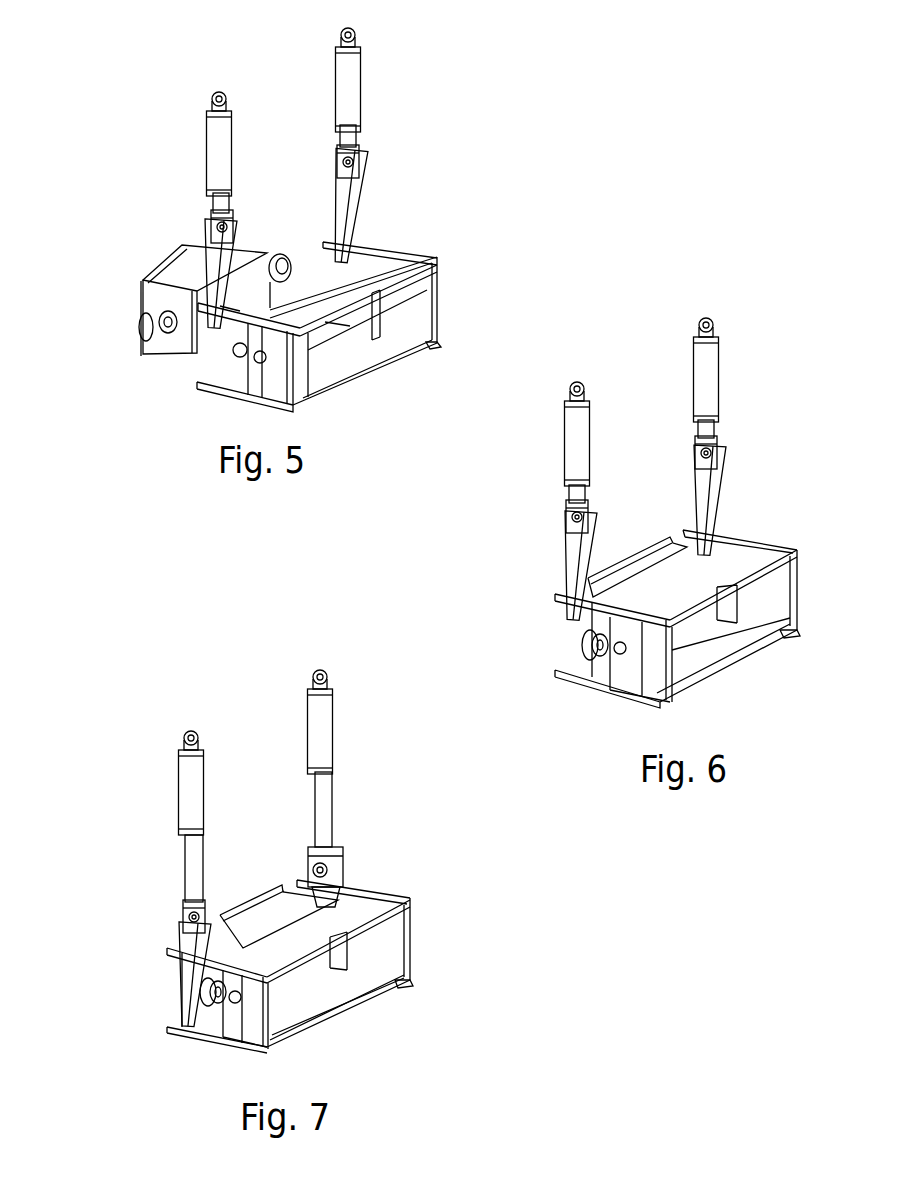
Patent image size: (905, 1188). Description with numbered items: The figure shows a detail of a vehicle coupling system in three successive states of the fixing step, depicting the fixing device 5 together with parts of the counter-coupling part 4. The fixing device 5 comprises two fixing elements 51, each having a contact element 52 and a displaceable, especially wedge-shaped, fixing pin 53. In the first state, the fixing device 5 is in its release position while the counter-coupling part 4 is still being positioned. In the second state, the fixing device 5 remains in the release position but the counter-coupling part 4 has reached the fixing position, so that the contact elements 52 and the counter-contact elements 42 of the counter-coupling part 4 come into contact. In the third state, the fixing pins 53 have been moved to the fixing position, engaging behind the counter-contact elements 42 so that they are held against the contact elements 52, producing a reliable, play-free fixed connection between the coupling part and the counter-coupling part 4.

In FIG. 5, the counter-coupling part 4 is at (152, 272).
In FIG. 6, the counter-coupling part 4 is at (660, 563).
In FIG. 7, the counter-coupling part 4 is at (274, 917).
In FIG. 5, the fixing device 5 is at (281, 249).
In FIG. 6, the fixing device 5 is at (660, 550).
In FIG. 7, the fixing device 5 is at (273, 901).
In FIG. 5, the counter-contact element 42 is at (142, 318).
In FIG. 6, the counter-contact element 42 is at (583, 635).
In FIG. 7, the counter-contact element 42 is at (205, 990).
In FIG. 5, the fixing element 51 is at (397, 219).
In FIG. 6, the fixing element 51 is at (764, 508).
In FIG. 7, the fixing element 51 is at (377, 863).
In FIG. 5, the contact element 52 is at (255, 357).
In FIG. 6, the contact element 52 is at (626, 652).
In FIG. 7, the contact element 52 is at (239, 999).
In FIG. 5, the fixing pin 53 is at (207, 230).
In FIG. 6, the fixing pin 53 is at (572, 547).
In FIG. 7, the fixing pin 53 is at (187, 970).